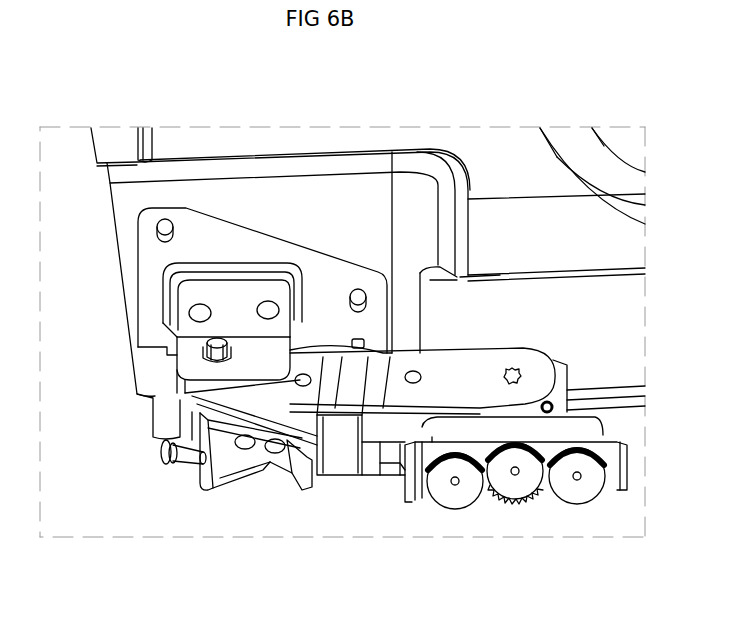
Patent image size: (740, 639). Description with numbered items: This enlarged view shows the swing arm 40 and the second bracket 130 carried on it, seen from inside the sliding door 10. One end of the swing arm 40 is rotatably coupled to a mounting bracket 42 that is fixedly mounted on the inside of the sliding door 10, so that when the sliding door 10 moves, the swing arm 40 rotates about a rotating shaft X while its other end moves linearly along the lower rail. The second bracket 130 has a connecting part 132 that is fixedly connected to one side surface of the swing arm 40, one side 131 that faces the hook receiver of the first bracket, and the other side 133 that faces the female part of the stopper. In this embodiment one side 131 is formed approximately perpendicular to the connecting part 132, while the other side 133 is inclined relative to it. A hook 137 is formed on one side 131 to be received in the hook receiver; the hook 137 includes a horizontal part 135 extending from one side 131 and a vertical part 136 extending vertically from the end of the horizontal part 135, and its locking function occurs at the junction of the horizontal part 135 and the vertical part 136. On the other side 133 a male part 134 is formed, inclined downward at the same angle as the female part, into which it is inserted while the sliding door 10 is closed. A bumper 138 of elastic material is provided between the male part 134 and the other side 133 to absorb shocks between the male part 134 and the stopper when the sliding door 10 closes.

The sliding door 10 is at (507, 168).
The swing arm 40 is at (477, 370).
The mounting bracket 42 is at (248, 293).
The rotating shaft X is at (215, 343).
The second bracket 130 is at (222, 572).
The one side 131 is at (225, 478).
The connecting part 132 is at (247, 472).
The other side 133 is at (300, 480).
The male part 134 is at (367, 478).
The horizontal part 135 is at (185, 462).
The vertical part 136 is at (162, 462).
The hook 137 is at (142, 572).
The bumper 138 is at (335, 477).